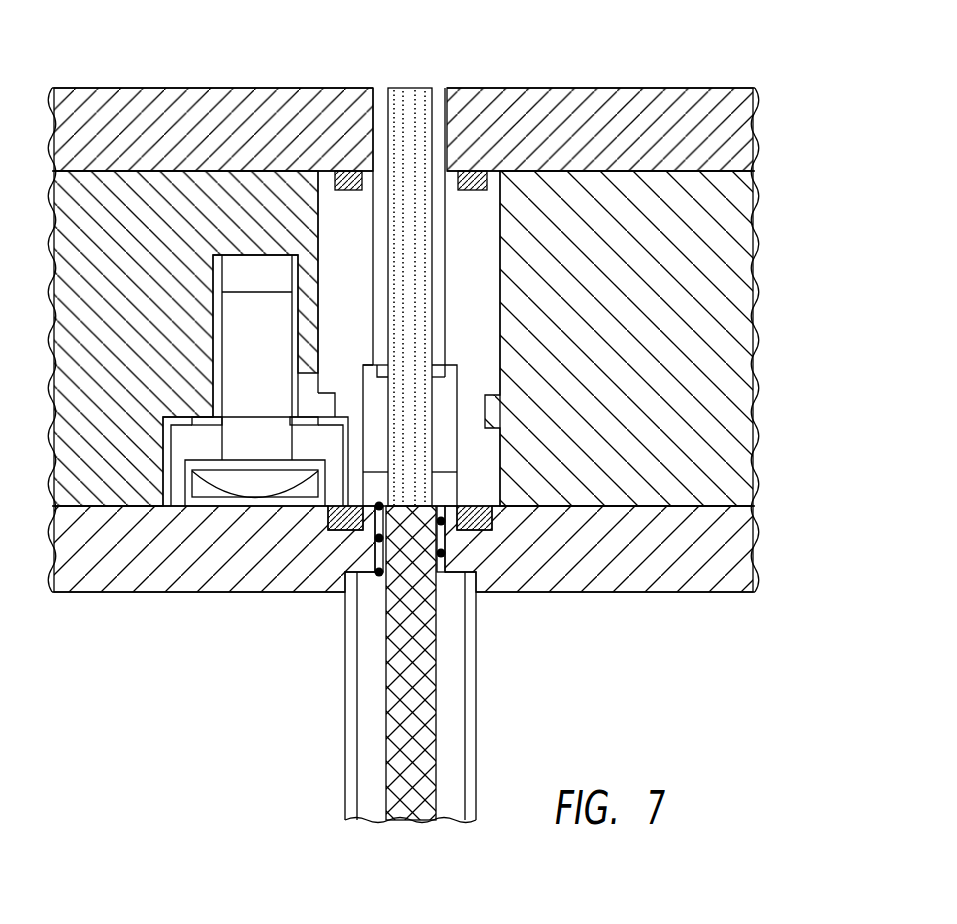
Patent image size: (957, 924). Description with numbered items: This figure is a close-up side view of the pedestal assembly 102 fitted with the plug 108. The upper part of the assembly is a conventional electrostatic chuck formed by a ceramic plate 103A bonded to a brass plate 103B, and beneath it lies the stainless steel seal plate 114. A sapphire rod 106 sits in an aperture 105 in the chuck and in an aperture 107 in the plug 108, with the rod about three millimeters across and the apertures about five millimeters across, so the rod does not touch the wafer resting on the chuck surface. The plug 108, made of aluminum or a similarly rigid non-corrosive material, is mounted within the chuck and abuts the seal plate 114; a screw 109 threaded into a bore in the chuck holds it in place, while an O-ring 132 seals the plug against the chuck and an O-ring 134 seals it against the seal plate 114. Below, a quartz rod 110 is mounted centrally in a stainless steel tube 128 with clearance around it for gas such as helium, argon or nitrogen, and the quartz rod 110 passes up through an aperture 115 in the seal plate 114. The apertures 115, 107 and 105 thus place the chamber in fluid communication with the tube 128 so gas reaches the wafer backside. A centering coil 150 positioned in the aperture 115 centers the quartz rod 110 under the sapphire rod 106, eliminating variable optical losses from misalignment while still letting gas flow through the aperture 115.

The pedestal assembly 102 is at (489, 414).
The ceramic plate 103A is at (752, 130).
The brass plate 103B is at (750, 336).
The aperture 105 is at (384, 92).
The sapphire rod 106 is at (416, 88).
The aperture 107 is at (379, 278).
The plug 108 is at (487, 307).
The screw 109 is at (270, 341).
The quartz rod 110 is at (385, 672).
The seal plate 114 is at (750, 539).
The aperture 115 is at (442, 574).
The stainless steel tube 128 is at (478, 717).
The O-ring 132 is at (349, 191).
The O-ring 134 is at (472, 506).
The centering coil 150 is at (376, 496).